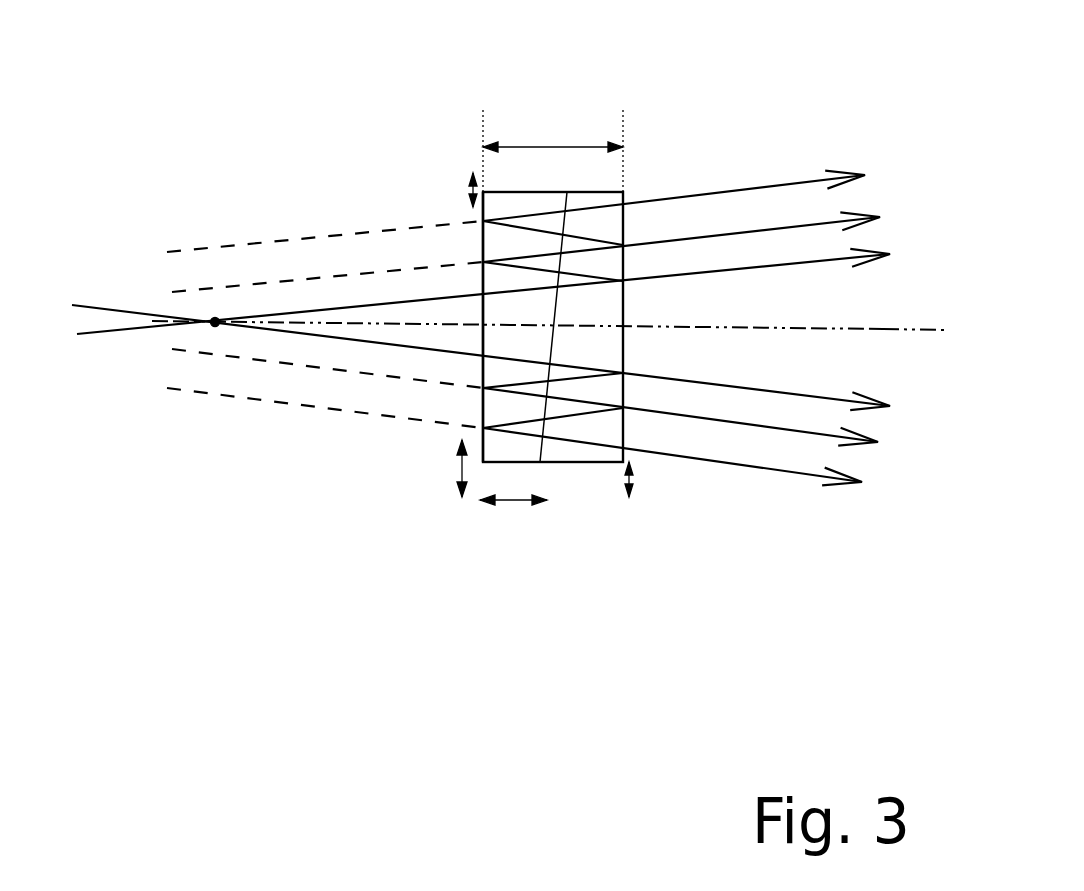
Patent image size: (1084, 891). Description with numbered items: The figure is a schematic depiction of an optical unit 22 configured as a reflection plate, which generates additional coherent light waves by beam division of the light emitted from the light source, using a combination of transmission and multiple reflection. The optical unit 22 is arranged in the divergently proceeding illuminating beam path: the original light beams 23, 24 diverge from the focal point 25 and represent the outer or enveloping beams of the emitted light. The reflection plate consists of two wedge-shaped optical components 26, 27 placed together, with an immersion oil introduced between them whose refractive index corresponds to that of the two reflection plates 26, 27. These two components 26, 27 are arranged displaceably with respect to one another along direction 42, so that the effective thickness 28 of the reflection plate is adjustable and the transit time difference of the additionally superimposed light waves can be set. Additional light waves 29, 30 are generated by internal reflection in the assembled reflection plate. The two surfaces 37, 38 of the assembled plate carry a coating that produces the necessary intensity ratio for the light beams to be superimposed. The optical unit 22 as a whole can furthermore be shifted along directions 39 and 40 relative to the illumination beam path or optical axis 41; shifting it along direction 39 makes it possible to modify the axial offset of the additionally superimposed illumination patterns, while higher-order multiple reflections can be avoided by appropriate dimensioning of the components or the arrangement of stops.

The optical unit 22 is at (413, 212).
The original light beam 23 is at (688, 384).
The original light beam 24 is at (774, 263).
The focal point 25 is at (217, 328).
The wedge-shaped optical component 26 is at (563, 450).
The wedge-shaped optical component 27 is at (533, 187).
The effective thickness 28 is at (538, 147).
The additional light wave 29 is at (732, 232).
The additional light wave 30 is at (660, 195).
The surface of the reflection plate 37 is at (478, 372).
The surface of the reflection plate 38 is at (688, 326).
The direction 39 is at (512, 502).
The direction 40 is at (455, 468).
The optical axis 41 is at (878, 328).
The direction 42 is at (470, 190).